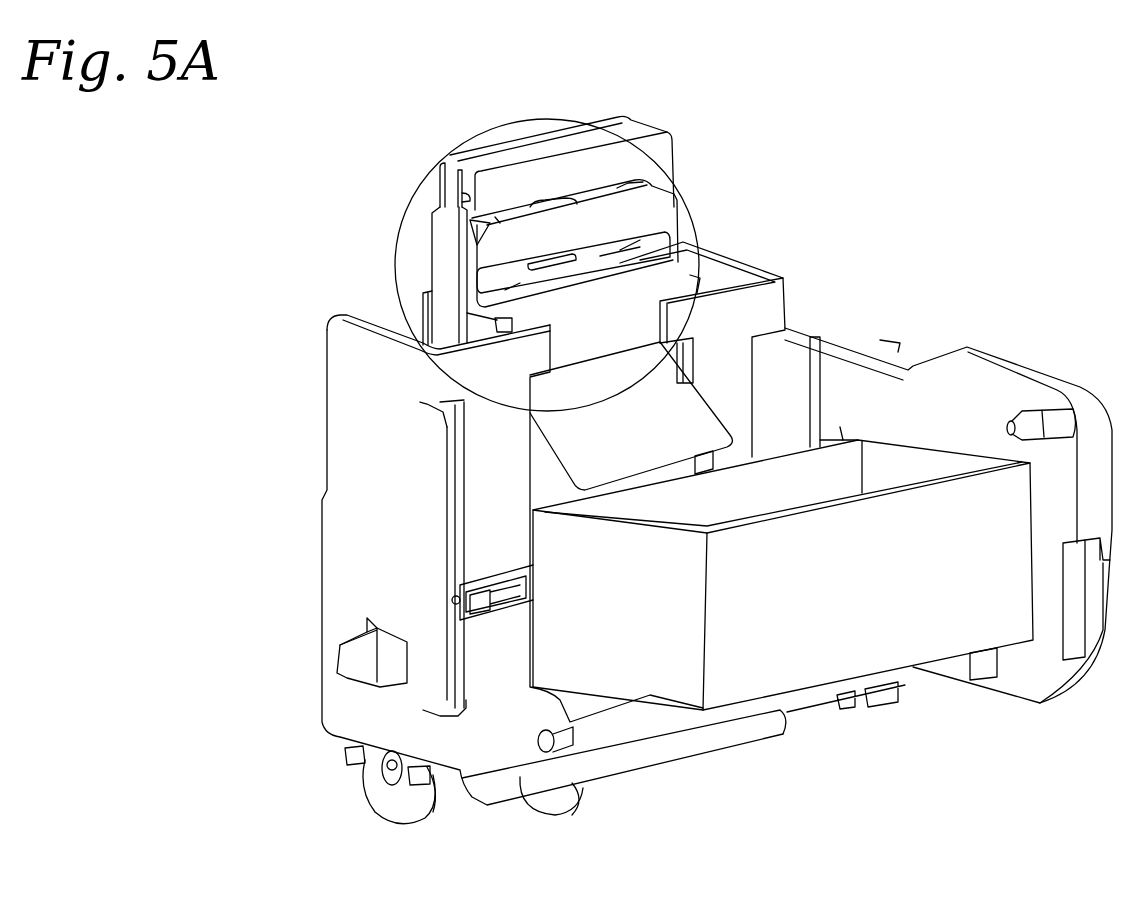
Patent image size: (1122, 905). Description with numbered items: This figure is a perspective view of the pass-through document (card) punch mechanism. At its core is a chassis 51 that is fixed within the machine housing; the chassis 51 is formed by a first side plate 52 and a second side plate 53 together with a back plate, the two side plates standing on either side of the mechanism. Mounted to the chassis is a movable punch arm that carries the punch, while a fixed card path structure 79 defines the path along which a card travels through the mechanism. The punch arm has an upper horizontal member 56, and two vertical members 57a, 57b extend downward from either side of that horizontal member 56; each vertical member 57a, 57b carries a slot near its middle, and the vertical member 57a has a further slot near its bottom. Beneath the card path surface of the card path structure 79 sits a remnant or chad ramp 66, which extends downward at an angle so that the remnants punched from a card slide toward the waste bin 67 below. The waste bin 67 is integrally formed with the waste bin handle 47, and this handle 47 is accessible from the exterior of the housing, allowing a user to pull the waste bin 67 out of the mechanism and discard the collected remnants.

The waste bin handle 47 is at (980, 387).
The chassis 51 is at (272, 497).
The first side plate 52 is at (357, 538).
The second side plate 53 is at (720, 270).
The upper horizontal member 56 is at (458, 190).
The vertical member 57a is at (670, 183).
The vertical member 57b is at (442, 262).
The chad ramp 66 is at (685, 398).
The waste bin 67 is at (898, 630).
The card path structure 79 is at (653, 203).